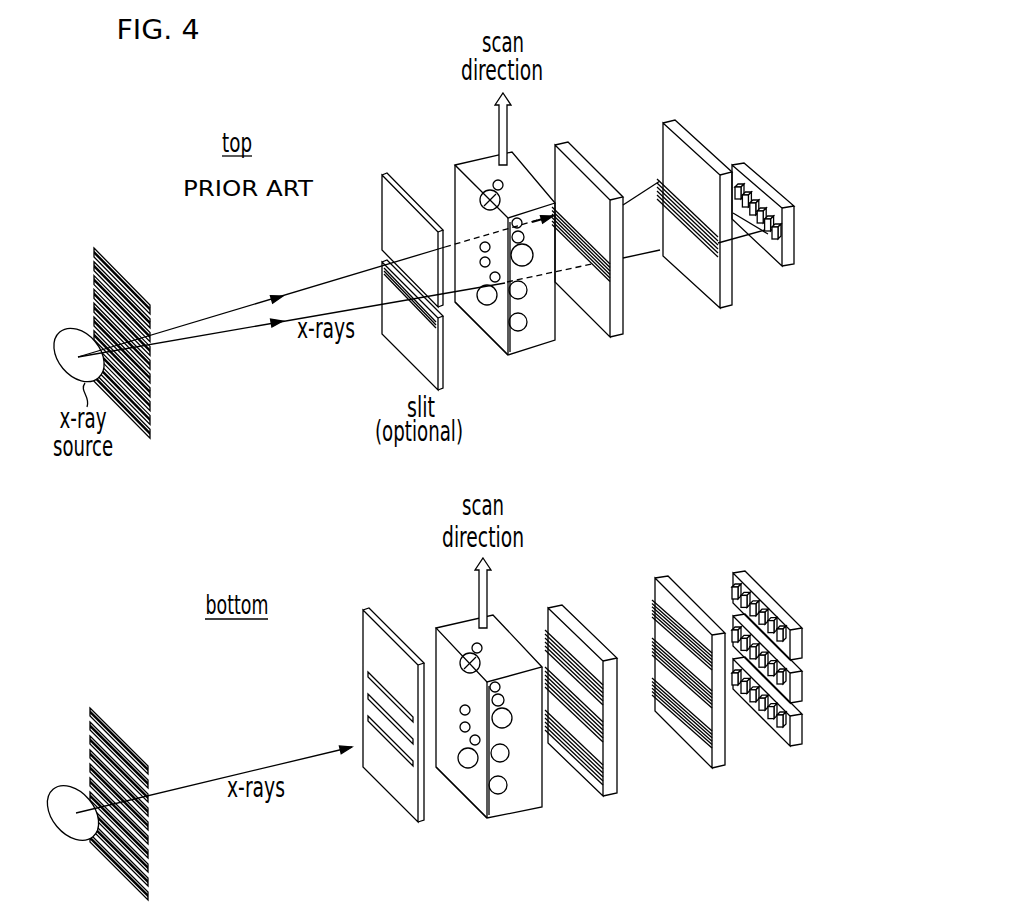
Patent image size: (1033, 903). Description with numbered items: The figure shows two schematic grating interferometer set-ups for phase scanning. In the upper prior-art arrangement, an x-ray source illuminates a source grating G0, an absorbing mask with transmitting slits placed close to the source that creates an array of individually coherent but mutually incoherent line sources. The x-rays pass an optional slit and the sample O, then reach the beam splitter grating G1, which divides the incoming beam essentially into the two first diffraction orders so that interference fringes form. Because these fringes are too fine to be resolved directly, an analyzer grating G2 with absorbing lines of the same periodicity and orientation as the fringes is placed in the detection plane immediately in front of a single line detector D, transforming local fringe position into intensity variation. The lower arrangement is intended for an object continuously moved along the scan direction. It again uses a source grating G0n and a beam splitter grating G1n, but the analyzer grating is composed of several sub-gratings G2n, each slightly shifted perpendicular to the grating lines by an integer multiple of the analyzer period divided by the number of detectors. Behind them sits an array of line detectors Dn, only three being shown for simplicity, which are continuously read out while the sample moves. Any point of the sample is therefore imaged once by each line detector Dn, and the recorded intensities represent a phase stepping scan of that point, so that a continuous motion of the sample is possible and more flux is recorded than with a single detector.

The source grating G0 is at (150, 374).
The sample O is at (460, 176).
The beam splitter grating G1 is at (558, 157).
The analyzer grating G2 is at (667, 130).
The line detector D is at (733, 165).
The source grating G0n is at (92, 712).
The beam splitter grating G1n is at (552, 615).
The sub-gratings G2n is at (658, 585).
The line detectors Dn is at (733, 575).